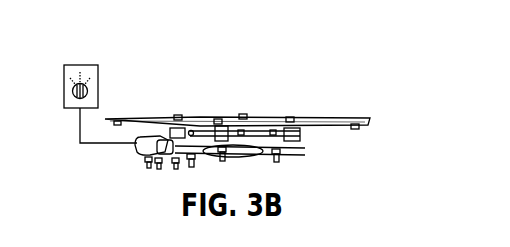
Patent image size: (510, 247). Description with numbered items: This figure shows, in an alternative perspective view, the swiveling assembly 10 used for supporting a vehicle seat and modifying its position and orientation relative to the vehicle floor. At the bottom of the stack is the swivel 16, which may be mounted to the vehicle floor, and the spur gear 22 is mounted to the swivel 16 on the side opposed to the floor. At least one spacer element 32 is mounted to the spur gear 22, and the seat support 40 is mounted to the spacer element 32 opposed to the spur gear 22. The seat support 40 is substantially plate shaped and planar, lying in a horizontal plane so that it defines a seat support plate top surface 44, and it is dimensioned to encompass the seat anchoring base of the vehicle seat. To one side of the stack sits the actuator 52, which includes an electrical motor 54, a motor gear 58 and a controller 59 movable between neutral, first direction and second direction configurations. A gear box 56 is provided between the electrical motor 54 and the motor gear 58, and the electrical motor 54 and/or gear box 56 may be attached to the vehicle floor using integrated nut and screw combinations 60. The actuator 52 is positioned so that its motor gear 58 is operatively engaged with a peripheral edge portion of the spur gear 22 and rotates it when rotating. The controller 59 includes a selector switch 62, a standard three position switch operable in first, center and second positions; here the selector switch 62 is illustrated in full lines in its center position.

The swiveling assembly 10 is at (176, 68).
The swivel 16 is at (285, 152).
The spur gear 22 is at (305, 138).
The spacer element 32 is at (227, 127).
The seat support 40 is at (322, 118).
The seat support plate top surface 44 is at (262, 118).
The actuator 52 is at (135, 150).
The electrical motor 54 is at (143, 151).
The gear box 56 is at (158, 164).
The motor gear 58 is at (174, 166).
The controller 59 is at (82, 65).
The integrated nut and screw combinations 60 is at (147, 163).
The selector switch 62 is at (89, 90).